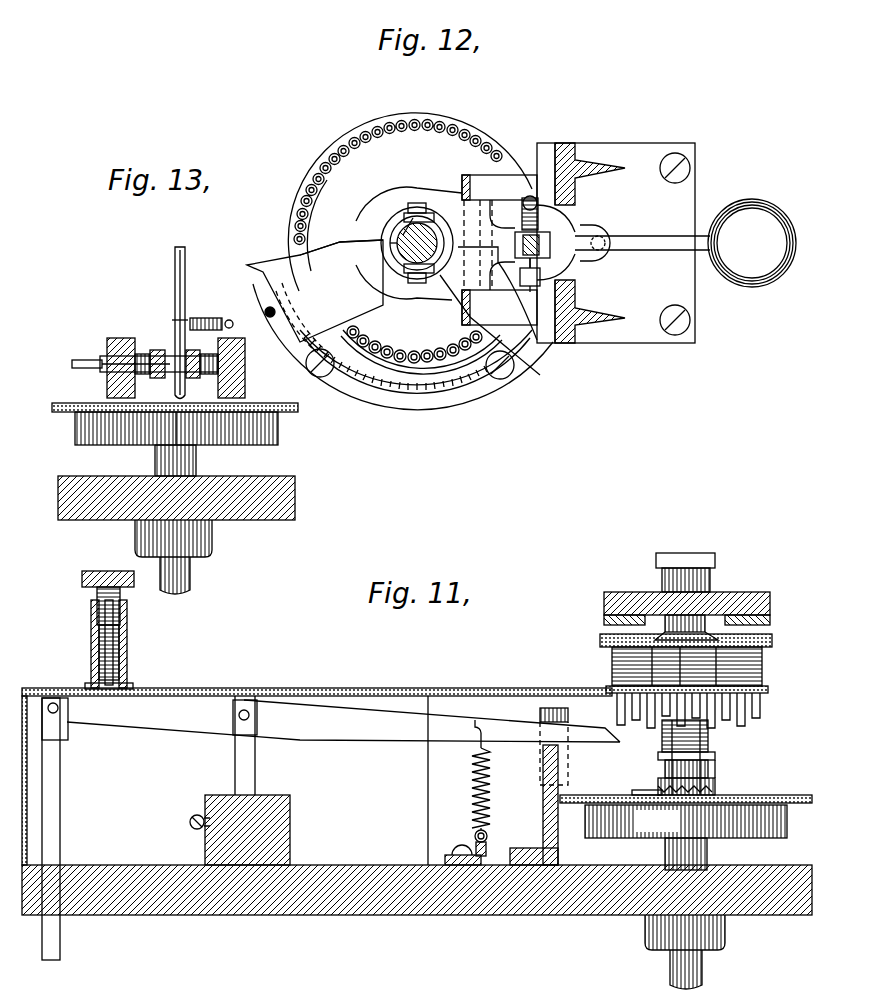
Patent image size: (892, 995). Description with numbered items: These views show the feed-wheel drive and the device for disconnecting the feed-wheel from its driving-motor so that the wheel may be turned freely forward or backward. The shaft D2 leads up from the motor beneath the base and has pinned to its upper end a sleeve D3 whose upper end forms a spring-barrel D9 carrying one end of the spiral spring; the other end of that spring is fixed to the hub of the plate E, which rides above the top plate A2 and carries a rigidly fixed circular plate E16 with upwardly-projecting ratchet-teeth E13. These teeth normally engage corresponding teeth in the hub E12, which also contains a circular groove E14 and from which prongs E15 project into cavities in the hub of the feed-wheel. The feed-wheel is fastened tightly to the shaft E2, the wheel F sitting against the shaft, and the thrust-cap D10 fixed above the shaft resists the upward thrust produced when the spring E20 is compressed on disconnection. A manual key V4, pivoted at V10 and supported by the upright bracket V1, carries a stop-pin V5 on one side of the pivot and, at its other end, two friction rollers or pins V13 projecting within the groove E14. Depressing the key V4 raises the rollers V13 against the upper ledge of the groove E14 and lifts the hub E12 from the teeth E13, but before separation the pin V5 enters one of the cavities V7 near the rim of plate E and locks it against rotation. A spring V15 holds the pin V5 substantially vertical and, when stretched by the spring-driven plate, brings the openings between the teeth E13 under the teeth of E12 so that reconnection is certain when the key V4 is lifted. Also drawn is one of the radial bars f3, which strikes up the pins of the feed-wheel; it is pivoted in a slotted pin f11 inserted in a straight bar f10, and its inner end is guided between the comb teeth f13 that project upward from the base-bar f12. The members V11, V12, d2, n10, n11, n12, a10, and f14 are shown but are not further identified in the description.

In FIG. 12, the cavities V7 is at (335, 132).
In FIG. 13, the cavities V7 is at (176, 415).
In FIG. 12, the pivot V10 is at (468, 337).
In FIG. 13, the pivot V10 is at (72, 364).
In FIG. 12, the clamp bar V11 is at (458, 312).
In FIG. 13, the clamp bar V11 is at (258, 395).
In FIG. 12, the clamp screw V12 is at (410, 204).
In FIG. 12, the friction rollers or pins V13 is at (400, 228).
In FIG. 12, the spring V15 is at (555, 210).
In FIG. 13, the spring V15 is at (209, 318).
In FIG. 12, the upright bracket V1 is at (620, 200).
In FIG. 12, the manual key V4 is at (652, 245).
In FIG. 12, the stop-pin V5 is at (545, 260).
In FIG. 13, the stop-pin V5 is at (175, 273).
In FIG. 12, the plate E is at (300, 215).
In FIG. 13, the plate E is at (298, 412).
In FIG. 11, the plate E is at (578, 803).
In FIG. 12, the shaft E2 is at (398, 258).
In FIG. 12, the circular groove E14 is at (392, 240).
In FIG. 11, the circular groove E14 is at (715, 778).
In FIG. 12, the circular plate E16 is at (428, 205).
In FIG. 11, the circular plate E16 is at (632, 792).
In FIG. 12, the base-bar f12 is at (468, 400).
In FIG. 11, the base-bar f12 is at (543, 828).
In FIG. 12, the comb teeth f13 is at (410, 392).
In FIG. 11, the comb teeth f13 is at (545, 710).
In FIG. 13, the spring-barrel D9 is at (278, 440).
In FIG. 11, the spring-barrel D9 is at (686, 821).
In FIG. 13, the sleeve D3 is at (185, 462).
In FIG. 11, the sleeve D3 is at (700, 855).
In FIG. 13, the shaft D2 is at (180, 577).
In FIG. 11, the shaft D2 is at (702, 970).
In FIG. 13, the top plate A2 is at (250, 498).
In FIG. 11, the top plate A2 is at (372, 905).
In FIG. 11, the thrust-cap D10 is at (700, 553).
In FIG. 11, the disc d2 is at (790, 640).
In FIG. 11, the wheel F is at (762, 712).
In FIG. 11, the prongs E15 is at (715, 758).
In FIG. 11, the spring E20 is at (662, 745).
In FIG. 11, the ratchet-teeth E13 is at (708, 770).
In FIG. 11, the hub E12 is at (715, 790).
In FIG. 11, the screw head n10 is at (97, 605).
In FIG. 11, the sleeve n11 is at (127, 660).
In FIG. 11, the spring rod n12 is at (91, 665).
In FIG. 11, the post rod a10 is at (60, 800).
In FIG. 11, the radial bars f3 is at (385, 732).
In FIG. 11, the slotted pins f11 is at (235, 760).
In FIG. 11, the straight bar f10 is at (290, 825).
In FIG. 11, the tension spring f14 is at (472, 792).